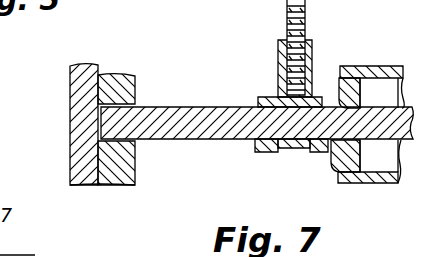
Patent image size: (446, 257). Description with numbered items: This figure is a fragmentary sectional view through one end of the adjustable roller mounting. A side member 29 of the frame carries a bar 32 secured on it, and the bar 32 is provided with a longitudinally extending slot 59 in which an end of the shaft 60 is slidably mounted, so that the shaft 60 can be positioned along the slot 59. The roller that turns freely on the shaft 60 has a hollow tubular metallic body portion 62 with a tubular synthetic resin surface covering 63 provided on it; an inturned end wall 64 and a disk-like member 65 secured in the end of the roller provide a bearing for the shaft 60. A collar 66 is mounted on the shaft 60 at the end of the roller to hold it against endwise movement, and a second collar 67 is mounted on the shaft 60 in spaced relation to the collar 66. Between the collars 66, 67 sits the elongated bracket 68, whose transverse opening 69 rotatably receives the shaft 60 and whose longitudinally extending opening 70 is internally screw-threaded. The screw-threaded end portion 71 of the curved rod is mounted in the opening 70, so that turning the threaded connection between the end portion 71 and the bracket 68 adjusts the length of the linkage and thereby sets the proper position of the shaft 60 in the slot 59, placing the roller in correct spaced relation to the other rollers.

The side member 29 is at (72, 125).
The slot 59 is at (97, 108).
The bar 32 is at (125, 185).
The shaft 60 is at (170, 107).
The collar 67 is at (258, 150).
The transverse opening 69 is at (287, 149).
The collar 66 is at (318, 153).
The bracket 68 is at (280, 79).
The longitudinally extending opening 70 is at (278, 56).
The screw-threaded end portion 71 is at (306, 14).
The surface covering 63 is at (370, 66).
The inturned end wall 64 is at (337, 78).
The disk-like member 65 is at (354, 172).
The hollow tubular metallic body portion 62 is at (398, 181).